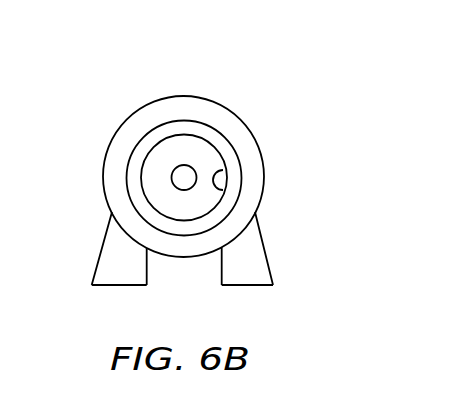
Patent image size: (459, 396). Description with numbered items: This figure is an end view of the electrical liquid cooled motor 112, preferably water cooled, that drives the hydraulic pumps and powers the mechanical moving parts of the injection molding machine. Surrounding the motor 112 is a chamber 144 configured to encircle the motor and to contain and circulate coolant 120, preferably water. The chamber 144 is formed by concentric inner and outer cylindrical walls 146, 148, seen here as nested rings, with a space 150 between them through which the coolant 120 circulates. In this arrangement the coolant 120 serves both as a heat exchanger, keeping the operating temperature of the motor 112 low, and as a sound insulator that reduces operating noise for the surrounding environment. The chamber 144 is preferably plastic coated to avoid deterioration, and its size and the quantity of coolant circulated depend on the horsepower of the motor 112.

The electrical liquid cooled motor 112 is at (223, 73).
The coolant 120 is at (127, 170).
The chamber 144 is at (222, 150).
The inner cylindrical wall 146 is at (218, 189).
The outer cylindrical wall 148 is at (192, 257).
The space 150 is at (128, 192).